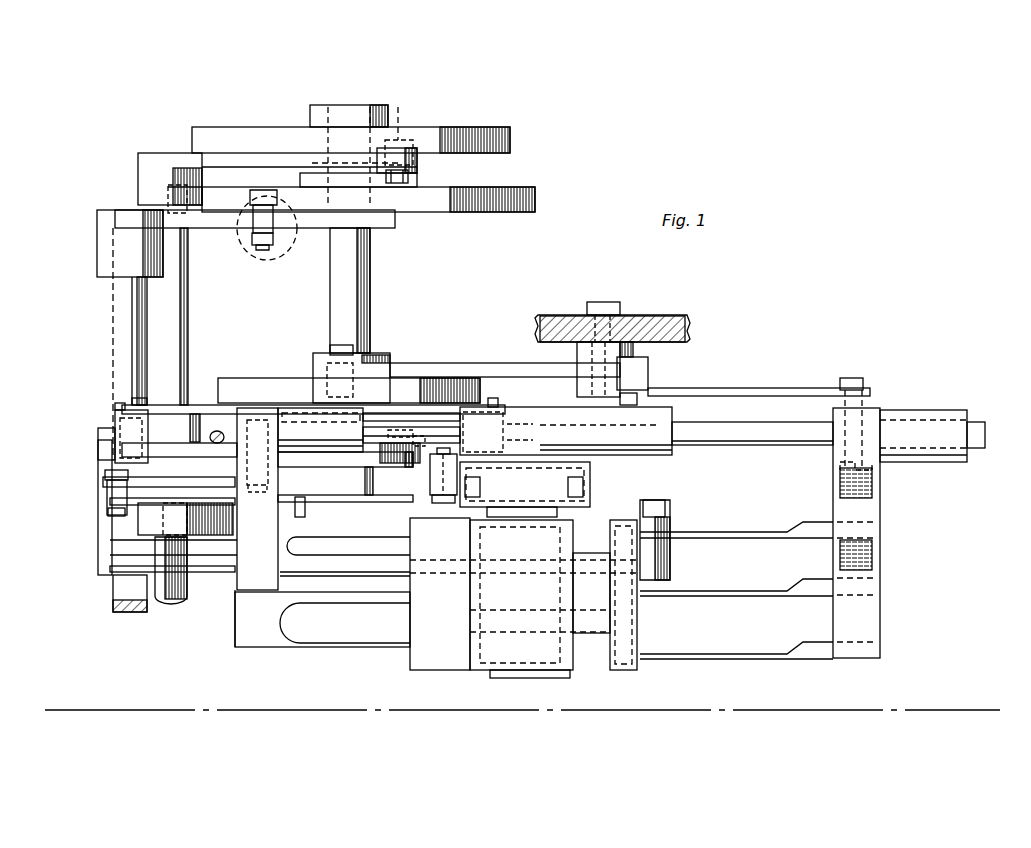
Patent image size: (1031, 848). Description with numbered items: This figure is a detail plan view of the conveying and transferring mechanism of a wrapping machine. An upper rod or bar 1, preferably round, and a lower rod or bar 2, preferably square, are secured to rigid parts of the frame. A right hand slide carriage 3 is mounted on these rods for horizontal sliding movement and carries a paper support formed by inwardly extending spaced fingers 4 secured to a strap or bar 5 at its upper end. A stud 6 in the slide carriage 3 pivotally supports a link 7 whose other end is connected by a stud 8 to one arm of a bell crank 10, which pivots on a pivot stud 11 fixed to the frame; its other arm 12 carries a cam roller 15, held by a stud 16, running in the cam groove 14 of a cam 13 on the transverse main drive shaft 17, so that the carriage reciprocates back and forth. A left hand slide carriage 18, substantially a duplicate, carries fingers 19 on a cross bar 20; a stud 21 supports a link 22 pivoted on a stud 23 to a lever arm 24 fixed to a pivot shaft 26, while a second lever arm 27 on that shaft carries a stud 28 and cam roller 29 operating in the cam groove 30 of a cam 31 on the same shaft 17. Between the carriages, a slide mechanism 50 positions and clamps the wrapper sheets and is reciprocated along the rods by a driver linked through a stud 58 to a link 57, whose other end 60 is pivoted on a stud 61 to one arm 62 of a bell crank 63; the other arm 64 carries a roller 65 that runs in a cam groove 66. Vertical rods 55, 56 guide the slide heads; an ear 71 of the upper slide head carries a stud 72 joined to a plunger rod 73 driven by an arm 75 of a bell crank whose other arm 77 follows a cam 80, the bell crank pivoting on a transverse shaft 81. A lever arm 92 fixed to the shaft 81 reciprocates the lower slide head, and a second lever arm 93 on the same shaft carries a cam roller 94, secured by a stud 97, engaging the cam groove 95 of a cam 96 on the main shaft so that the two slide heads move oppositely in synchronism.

The upper rod or bar 1 is at (985, 435).
The lower rod or bar 2 is at (76, 692).
The right hand slide carriage 3 is at (914, 406).
The fingers 4 is at (750, 536).
The strap or bar 5 is at (880, 548).
The stud 6 is at (852, 380).
The link 7 is at (770, 388).
The stud 8 is at (645, 360).
The bell crank 10 is at (552, 360).
The pivot stud 11 is at (622, 315).
The cam lever arm 12 is at (487, 365).
The cam 13 is at (243, 378).
The cam groove 14 is at (322, 390).
The cam roller 15 is at (371, 392).
The stud 16 is at (352, 345).
The transverse main drive shaft 17 is at (372, 270).
The left hand slide carriage 18 is at (198, 660).
The fingers 19 is at (332, 600).
The cross bar 20 is at (234, 592).
The stud 21 is at (252, 412).
The link 22 is at (82, 462).
The stud 23 is at (120, 516).
The lever arm 24 is at (105, 500).
The pivot shaft 26 is at (188, 305).
The second lever arm 27 is at (227, 162).
The stud 28 is at (408, 186).
The cam roller 29 is at (396, 106).
The cam groove 30 is at (420, 141).
The cam 31 is at (258, 127).
The slide mechanism 50 is at (624, 452).
The vertical rod 55 is at (568, 488).
The vertical rod 56 is at (480, 486).
The link 57 is at (430, 405).
The stud 58 is at (497, 400).
The other end of link 60 is at (148, 402).
The stud 61 is at (125, 408).
The arm of bell crank 62 is at (115, 420).
The bell crank 63 is at (112, 433).
The arm of bell crank 64 is at (352, 478).
The roller 65 is at (416, 399).
The cam groove 66 is at (395, 426).
The ear 71 is at (430, 480).
The stud 72 is at (422, 440).
The link or plunger rod 73 is at (452, 456).
The arm of bell crank 75 is at (385, 467).
The arm of bell crank 77 is at (300, 510).
The cam 80 is at (222, 534).
The transverse shaft 81 is at (123, 300).
The lever arm 92 is at (215, 568).
The second lever arm 93 is at (208, 228).
The cam roller 94 is at (258, 250).
The cam groove 95 is at (290, 210).
The cam 96 is at (535, 195).
The stud 97 is at (262, 246).